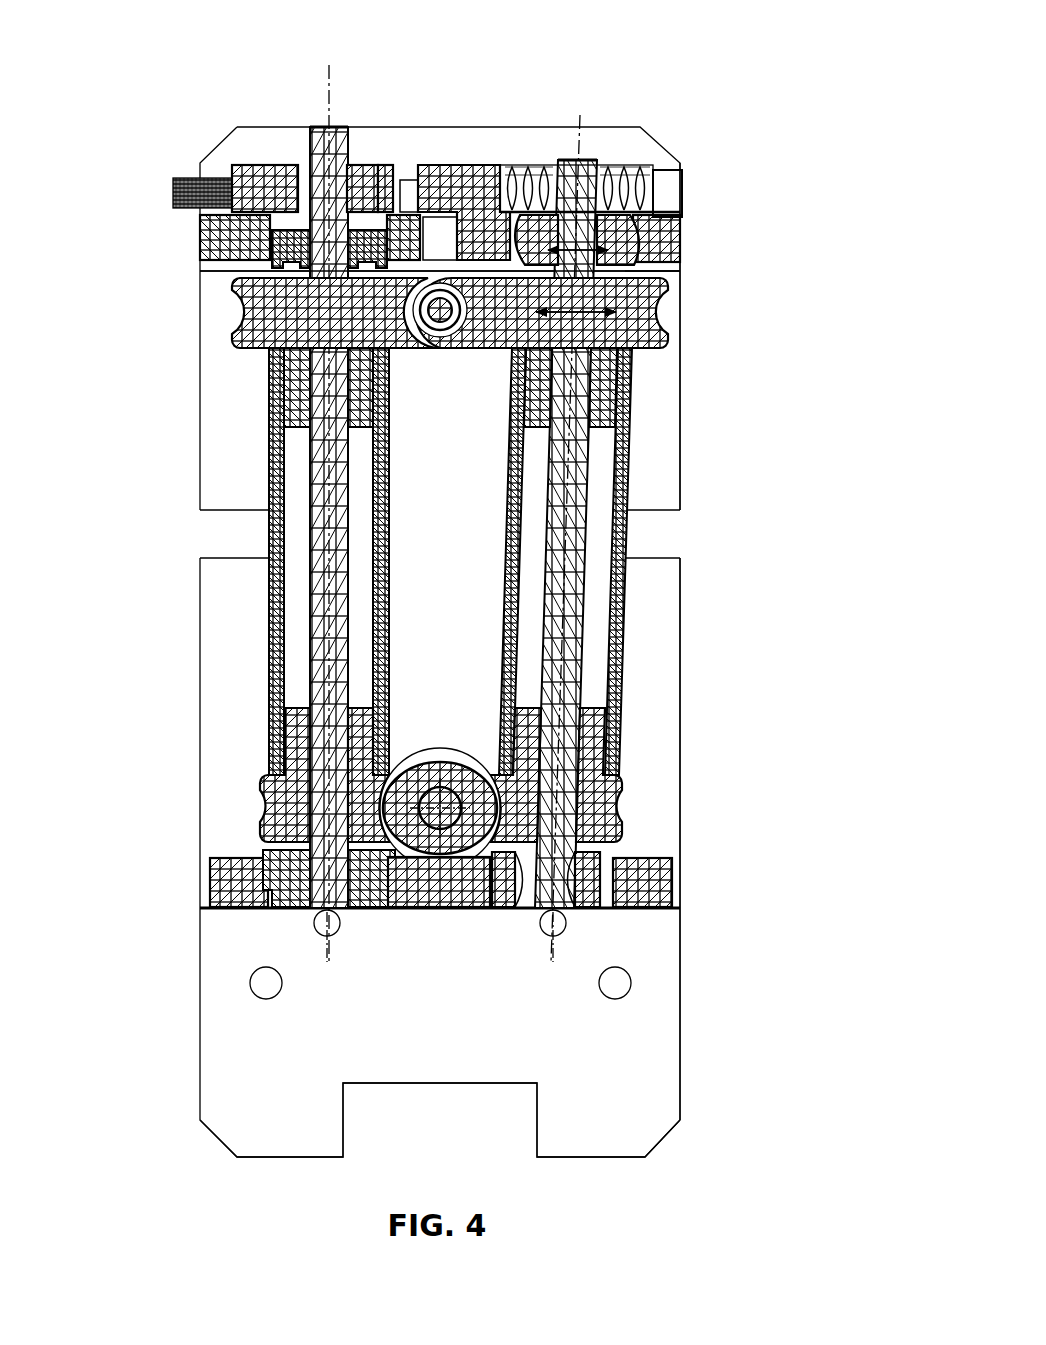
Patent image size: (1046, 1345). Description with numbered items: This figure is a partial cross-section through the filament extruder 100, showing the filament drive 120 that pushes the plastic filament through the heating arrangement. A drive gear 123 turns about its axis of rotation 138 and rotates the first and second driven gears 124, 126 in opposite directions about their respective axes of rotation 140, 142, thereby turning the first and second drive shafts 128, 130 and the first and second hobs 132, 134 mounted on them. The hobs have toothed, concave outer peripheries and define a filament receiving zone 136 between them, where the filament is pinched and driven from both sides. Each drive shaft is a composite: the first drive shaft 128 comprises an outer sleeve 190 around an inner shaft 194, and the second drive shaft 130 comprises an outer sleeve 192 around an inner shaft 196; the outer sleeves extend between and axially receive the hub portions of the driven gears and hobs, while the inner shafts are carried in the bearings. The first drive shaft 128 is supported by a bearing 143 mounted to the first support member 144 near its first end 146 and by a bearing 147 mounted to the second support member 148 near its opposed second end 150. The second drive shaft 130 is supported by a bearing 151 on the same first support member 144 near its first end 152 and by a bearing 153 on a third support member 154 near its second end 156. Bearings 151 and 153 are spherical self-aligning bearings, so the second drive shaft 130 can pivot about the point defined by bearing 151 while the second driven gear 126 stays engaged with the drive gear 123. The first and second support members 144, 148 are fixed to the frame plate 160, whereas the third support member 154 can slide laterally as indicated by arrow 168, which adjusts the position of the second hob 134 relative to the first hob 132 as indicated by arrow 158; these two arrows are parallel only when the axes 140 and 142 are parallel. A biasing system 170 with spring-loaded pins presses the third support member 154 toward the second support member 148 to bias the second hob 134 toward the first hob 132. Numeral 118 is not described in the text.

The filament extruder 100 is at (118, 360).
The pivot pin 118 is at (427, 278).
The filament drive 120 is at (808, 752).
The drive gear 123 is at (467, 767).
The first driven gear 124 is at (278, 812).
The second driven gear 126 is at (600, 812).
The first drive shaft 128 is at (285, 525).
The second drive shaft 130 is at (616, 528).
The first hob 132 is at (265, 318).
The second hob 134 is at (650, 314).
The filament receiving zone 136 is at (467, 260).
The axis of rotation 138 is at (423, 767).
The axis of rotation 140 is at (325, 692).
The axis of rotation 142 is at (570, 692).
The bearing 143 is at (290, 870).
The first support member 144 is at (215, 885).
The first end 146 is at (203, 848).
The bearing 147 is at (292, 250).
The second support member 148 is at (250, 240).
The second end 150 is at (203, 275).
The bearing 151 is at (595, 912).
The first end 152 is at (672, 848).
The bearing 153 is at (634, 168).
The third support member 154 is at (462, 182).
The second end 156 is at (683, 268).
The arrow 158 is at (625, 378).
The plate 160 is at (260, 1095).
The arrow 168 is at (543, 165).
The biasing system 170 is at (200, 161).
The outer sleeve 190 is at (277, 497).
The outer sleeve 192 is at (618, 495).
The inner shaft 194 is at (320, 612).
The inner shaft 196 is at (570, 612).